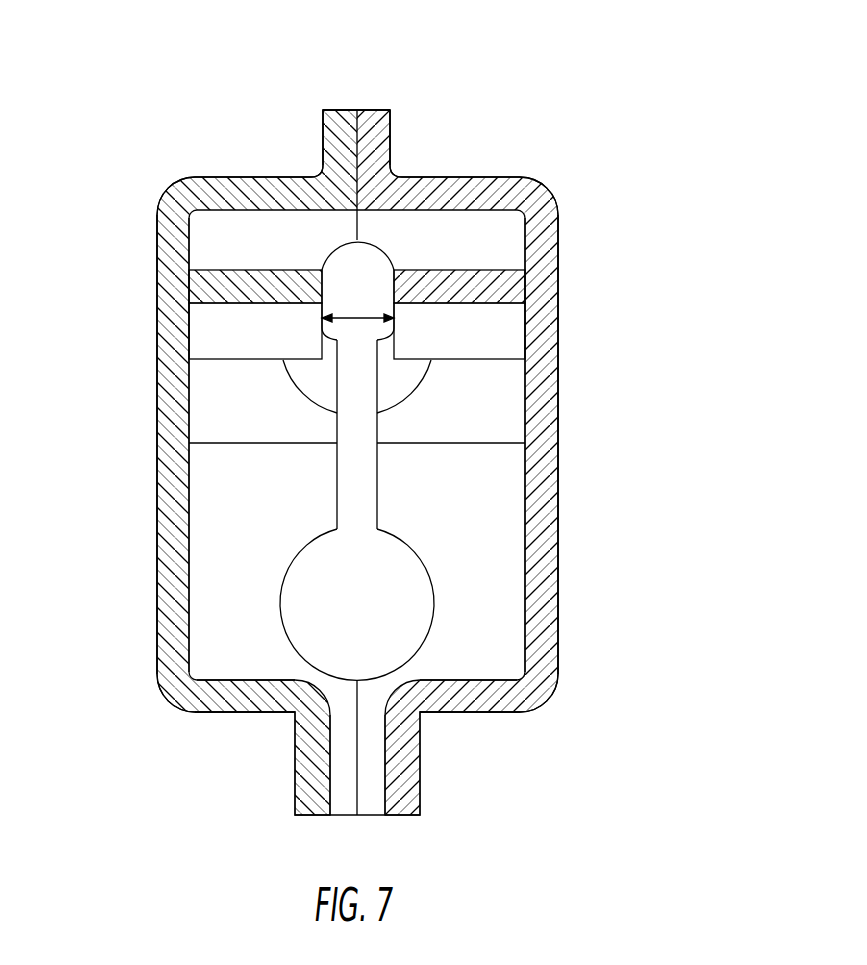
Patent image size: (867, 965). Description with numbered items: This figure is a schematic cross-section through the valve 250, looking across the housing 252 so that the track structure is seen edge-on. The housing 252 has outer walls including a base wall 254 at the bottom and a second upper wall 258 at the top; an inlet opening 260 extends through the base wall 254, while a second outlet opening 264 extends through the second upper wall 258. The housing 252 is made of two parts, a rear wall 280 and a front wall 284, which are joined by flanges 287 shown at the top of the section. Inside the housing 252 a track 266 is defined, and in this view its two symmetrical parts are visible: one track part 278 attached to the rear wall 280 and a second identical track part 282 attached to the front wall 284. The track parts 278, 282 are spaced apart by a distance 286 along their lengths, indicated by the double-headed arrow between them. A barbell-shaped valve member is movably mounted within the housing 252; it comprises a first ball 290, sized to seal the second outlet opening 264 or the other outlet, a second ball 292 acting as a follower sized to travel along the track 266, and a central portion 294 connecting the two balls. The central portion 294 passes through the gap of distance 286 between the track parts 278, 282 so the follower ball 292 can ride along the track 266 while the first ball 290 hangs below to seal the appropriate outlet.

The valve 250 is at (497, 108).
The housing 252 is at (560, 207).
The base wall 254 is at (485, 715).
The second upper wall 258 is at (470, 390).
The inlet opening 260 is at (372, 715).
The second outlet opening 264 is at (412, 397).
The track 266 is at (263, 265).
The track part 278 is at (473, 325).
The rear wall 280 is at (558, 518).
The track part 282 is at (215, 328).
The front wall 284 is at (157, 480).
The distance 286 is at (343, 317).
The flanges 287 is at (333, 110).
The first ball 290 is at (417, 603).
The second ball 292 is at (333, 267).
The central portion 294 is at (355, 483).